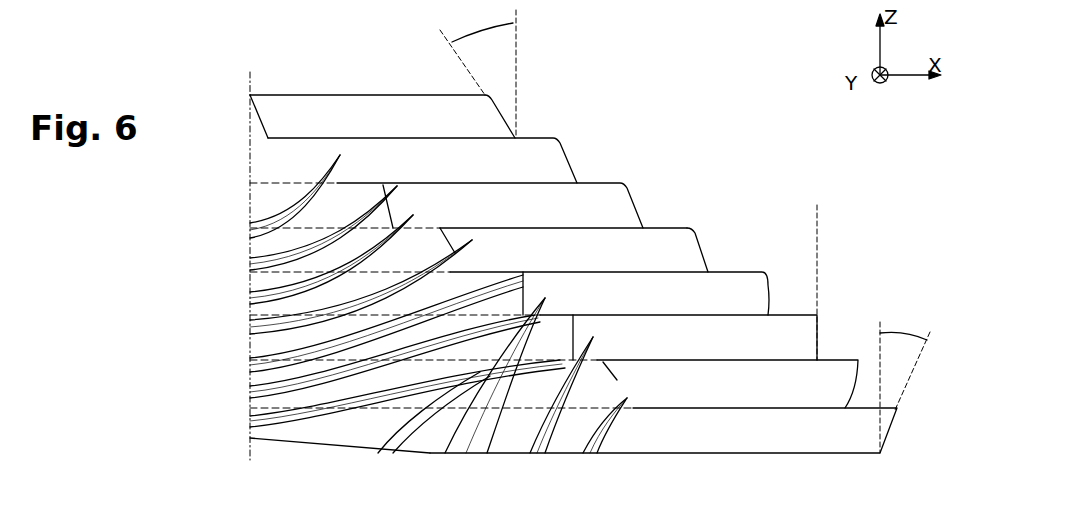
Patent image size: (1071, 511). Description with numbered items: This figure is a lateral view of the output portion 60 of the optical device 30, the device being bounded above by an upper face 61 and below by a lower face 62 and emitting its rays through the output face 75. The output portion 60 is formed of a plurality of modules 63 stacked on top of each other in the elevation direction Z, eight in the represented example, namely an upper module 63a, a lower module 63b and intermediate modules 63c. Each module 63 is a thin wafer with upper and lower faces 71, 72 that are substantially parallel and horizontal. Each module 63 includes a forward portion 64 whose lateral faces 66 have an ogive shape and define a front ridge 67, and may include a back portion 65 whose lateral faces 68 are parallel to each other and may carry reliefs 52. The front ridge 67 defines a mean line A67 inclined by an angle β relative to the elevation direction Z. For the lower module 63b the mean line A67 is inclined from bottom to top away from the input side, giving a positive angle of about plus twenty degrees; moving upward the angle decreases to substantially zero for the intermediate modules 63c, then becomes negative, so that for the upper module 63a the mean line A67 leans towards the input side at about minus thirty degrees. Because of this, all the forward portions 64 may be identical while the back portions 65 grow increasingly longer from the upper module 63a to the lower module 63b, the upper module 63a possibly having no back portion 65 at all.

The optical device 30 is at (773, 79).
The output portion 60 is at (750, 128).
The upper face 61 is at (307, 95).
The lower face 62 is at (440, 457).
The module 63 is at (375, 261).
The upper module 63a is at (255, 125).
The lower module 63b is at (280, 433).
The intermediate module 63c is at (273, 205).
The forward portion 64 is at (573, 109).
The back portion 65 is at (332, 465).
The lateral faces 66 is at (483, 118).
The front ridge 67 is at (702, 240).
The lateral faces 68 is at (377, 433).
The upper face 71 is at (420, 95).
The lower face 72 is at (413, 143).
The output face 75 is at (449, 289).
The reliefs 52 is at (582, 420).
The mean line A67 is at (517, 42).